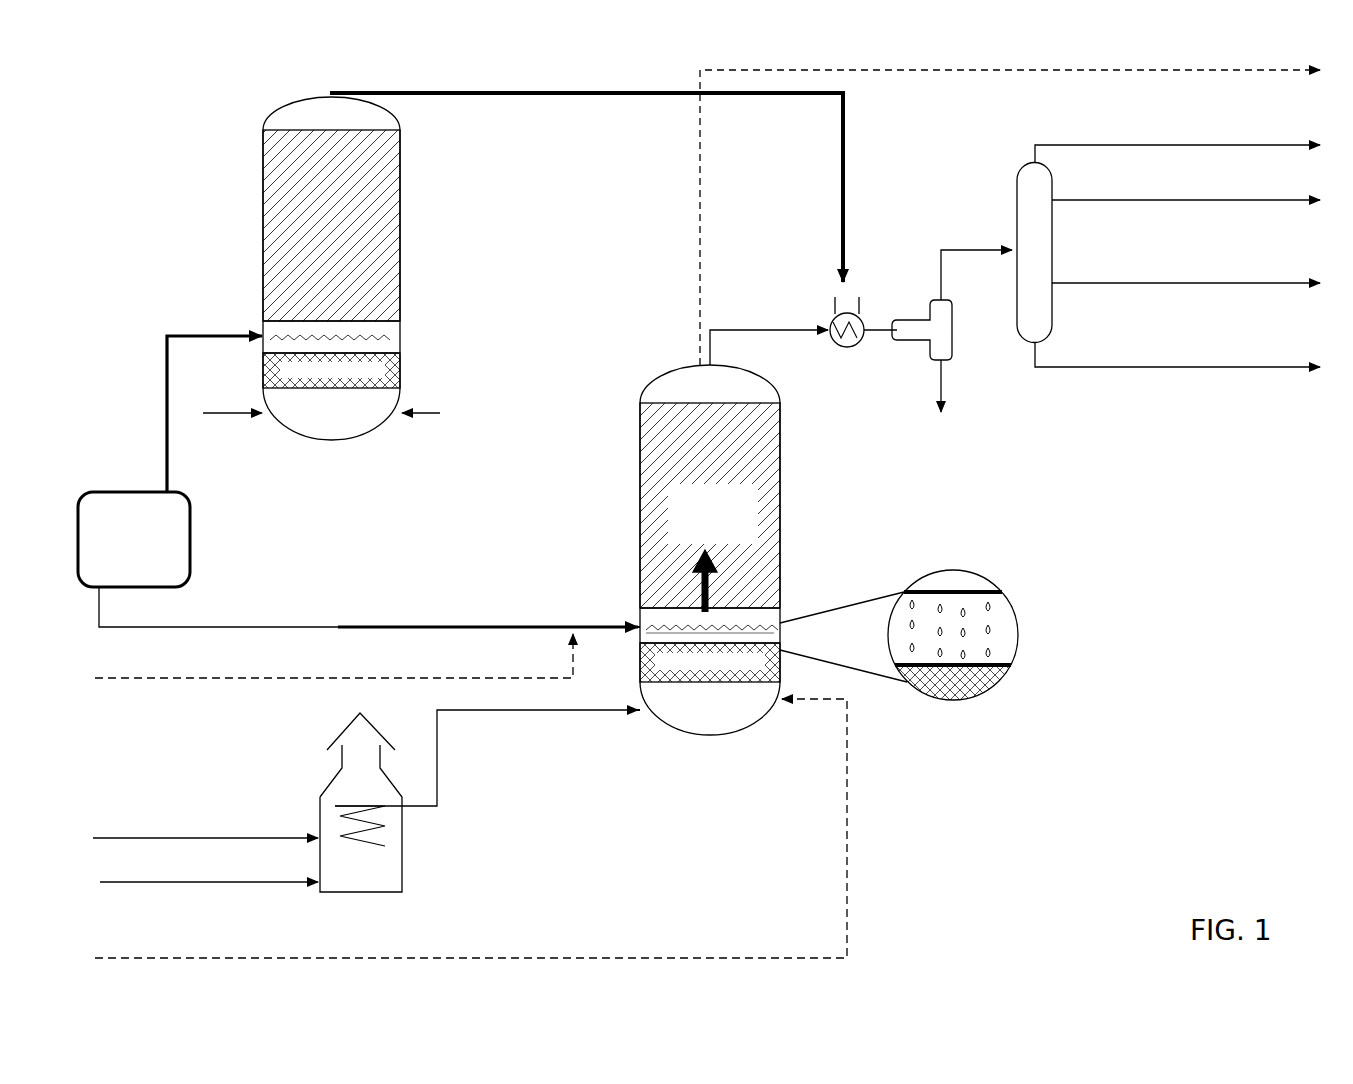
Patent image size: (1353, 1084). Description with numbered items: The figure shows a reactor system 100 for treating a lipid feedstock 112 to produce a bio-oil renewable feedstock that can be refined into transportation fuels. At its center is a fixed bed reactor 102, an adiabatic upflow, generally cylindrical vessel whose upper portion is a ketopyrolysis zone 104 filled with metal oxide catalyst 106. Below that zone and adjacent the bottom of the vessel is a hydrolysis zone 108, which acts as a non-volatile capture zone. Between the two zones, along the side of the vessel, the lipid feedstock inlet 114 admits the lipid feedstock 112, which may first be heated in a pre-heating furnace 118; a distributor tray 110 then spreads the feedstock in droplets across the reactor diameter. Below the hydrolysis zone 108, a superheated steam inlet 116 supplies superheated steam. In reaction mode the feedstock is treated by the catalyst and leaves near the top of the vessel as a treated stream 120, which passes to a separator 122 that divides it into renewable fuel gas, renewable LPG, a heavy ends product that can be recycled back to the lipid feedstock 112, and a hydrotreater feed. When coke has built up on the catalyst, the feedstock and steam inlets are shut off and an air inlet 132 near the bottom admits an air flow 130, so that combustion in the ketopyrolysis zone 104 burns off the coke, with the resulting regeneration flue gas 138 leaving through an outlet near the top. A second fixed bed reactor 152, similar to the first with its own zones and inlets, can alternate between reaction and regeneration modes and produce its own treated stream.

The reactor system 100 is at (146, 100).
The fixed bed reactor 102 is at (710, 550).
The ketopyrolysis zone 104 is at (713, 548).
The metal oxide catalyst 106 is at (752, 427).
The hydrolysis zone 108 is at (710, 672).
The distributor tray 110 is at (747, 627).
The lipid feedstock 112 is at (368, 607).
The lipid feedstock inlet 114 is at (632, 622).
The superheated steam inlet 116 is at (640, 712).
The pre-heating furnace 118 is at (134, 539).
The treated stream 120 is at (715, 328).
The separator 122 is at (1043, 330).
The air flow 130 is at (471, 828).
The air inlet 132 is at (780, 702).
The regeneration flue gas 138 is at (1010, 203).
The second fixed bed reactor 152 is at (400, 174).